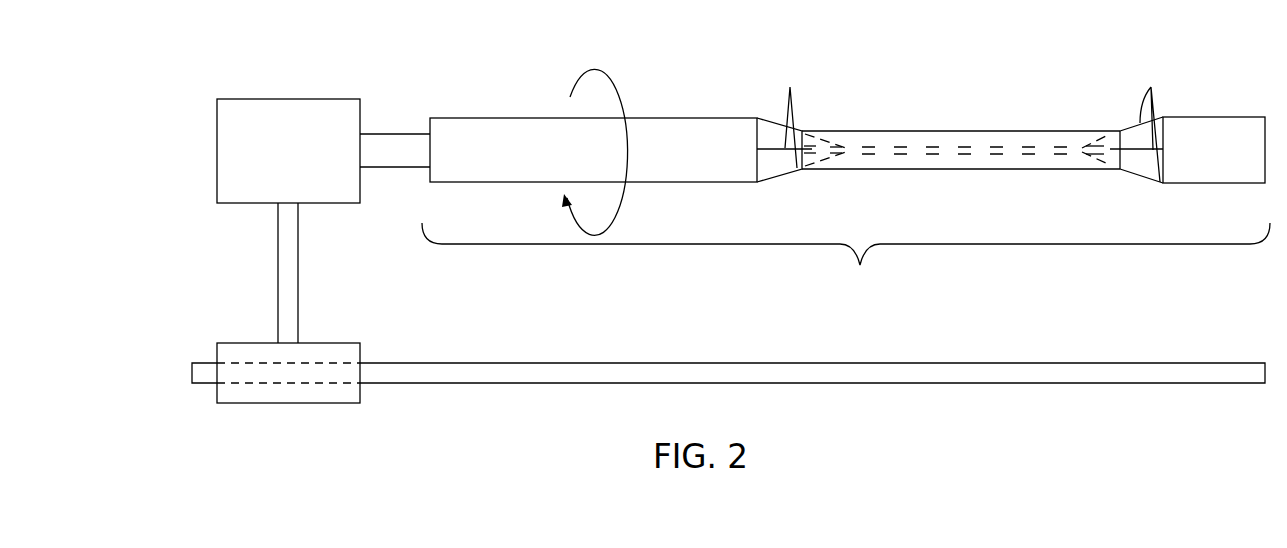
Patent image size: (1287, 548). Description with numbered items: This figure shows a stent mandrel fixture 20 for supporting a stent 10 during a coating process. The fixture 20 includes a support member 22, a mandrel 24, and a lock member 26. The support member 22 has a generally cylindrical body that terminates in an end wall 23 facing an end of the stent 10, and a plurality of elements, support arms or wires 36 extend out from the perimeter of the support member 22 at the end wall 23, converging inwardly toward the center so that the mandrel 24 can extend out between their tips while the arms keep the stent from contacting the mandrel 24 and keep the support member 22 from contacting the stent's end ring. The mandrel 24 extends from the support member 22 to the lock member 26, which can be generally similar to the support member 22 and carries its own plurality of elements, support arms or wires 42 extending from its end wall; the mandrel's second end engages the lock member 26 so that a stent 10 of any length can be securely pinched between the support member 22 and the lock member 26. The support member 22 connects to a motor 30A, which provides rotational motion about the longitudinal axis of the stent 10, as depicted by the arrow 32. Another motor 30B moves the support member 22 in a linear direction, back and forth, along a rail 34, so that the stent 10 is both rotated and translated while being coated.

The stent 10 is at (1022, 138).
The stent mandrel fixture 20 is at (846, 261).
The support member 22 is at (652, 142).
The end wall 23 is at (757, 117).
The mandrel 24 is at (917, 150).
The lock member 26 is at (1207, 125).
The motor 30A is at (268, 122).
The motor 30B is at (322, 352).
The arrow 32 is at (613, 80).
The rail 34 is at (1118, 370).
The elements, support arms or wires 36 is at (790, 88).
The elements, support arms or wires 42 is at (1151, 88).